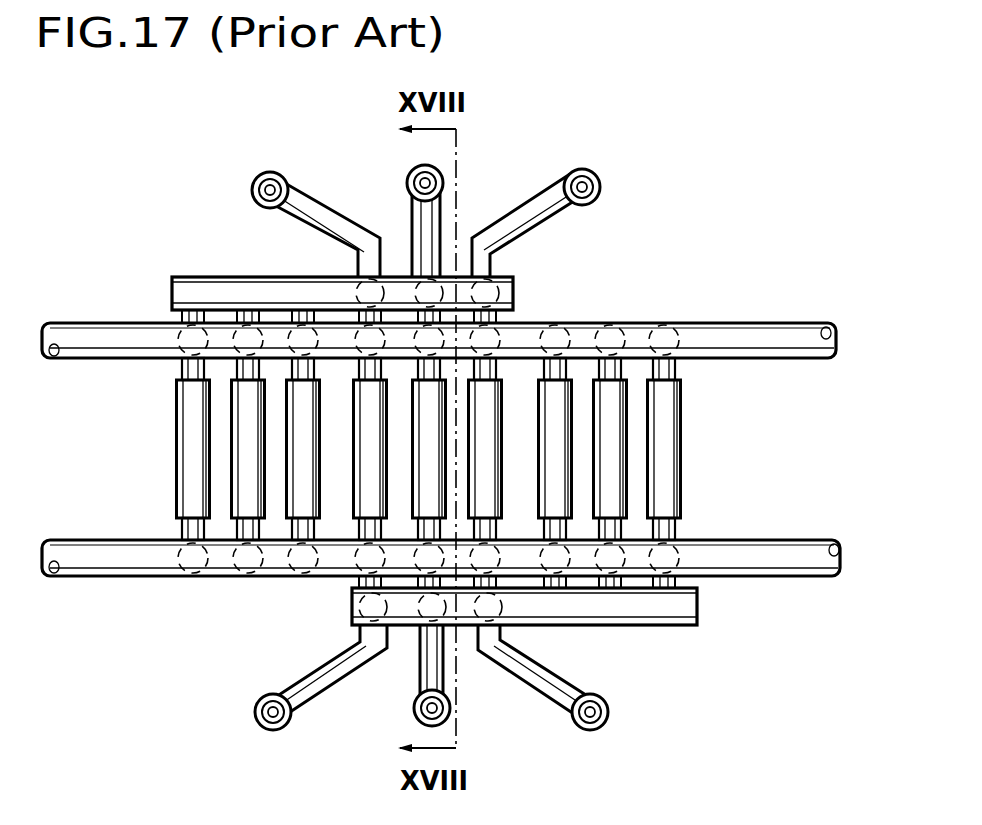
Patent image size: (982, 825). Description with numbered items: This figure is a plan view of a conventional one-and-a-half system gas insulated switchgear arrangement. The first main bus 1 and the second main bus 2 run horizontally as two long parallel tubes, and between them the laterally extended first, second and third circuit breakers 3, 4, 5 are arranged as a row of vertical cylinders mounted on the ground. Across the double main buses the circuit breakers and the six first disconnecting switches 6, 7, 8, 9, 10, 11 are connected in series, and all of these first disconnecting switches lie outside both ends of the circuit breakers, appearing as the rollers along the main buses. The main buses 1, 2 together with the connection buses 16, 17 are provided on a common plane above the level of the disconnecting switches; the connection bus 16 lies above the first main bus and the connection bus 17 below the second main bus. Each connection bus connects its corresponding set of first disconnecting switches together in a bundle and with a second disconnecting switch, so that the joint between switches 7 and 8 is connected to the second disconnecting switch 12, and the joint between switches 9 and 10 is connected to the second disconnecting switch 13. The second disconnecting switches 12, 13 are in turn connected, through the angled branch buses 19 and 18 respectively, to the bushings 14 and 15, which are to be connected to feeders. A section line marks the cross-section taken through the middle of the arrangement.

The first main bus 1 is at (685, 323).
The second main bus 2 is at (777, 577).
The first circuit breaker 3 is at (680, 433).
The second circuit breaker 4 is at (498, 431).
The third circuit breaker 5 is at (180, 448).
The first disconnecting switch 6 is at (577, 322).
The first disconnecting switch 7 is at (707, 540).
The first disconnecting switch 8 is at (360, 565).
The first disconnecting switch 9 is at (522, 322).
The first disconnecting switch 10 is at (178, 325).
The first disconnecting switch 11 is at (190, 560).
The second disconnecting switch 12 is at (365, 611).
The second disconnecting switch 13 is at (504, 275).
The bushing 14 is at (606, 720).
The bushing 15 is at (585, 172).
The connection bus 16 is at (215, 278).
The connection bus 17 is at (684, 626).
The branch bus 18 is at (571, 206).
The branch bus 19 is at (547, 700).